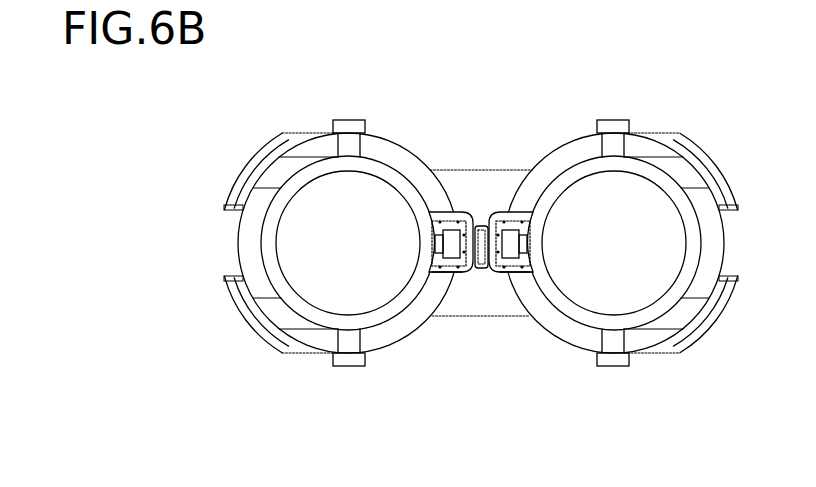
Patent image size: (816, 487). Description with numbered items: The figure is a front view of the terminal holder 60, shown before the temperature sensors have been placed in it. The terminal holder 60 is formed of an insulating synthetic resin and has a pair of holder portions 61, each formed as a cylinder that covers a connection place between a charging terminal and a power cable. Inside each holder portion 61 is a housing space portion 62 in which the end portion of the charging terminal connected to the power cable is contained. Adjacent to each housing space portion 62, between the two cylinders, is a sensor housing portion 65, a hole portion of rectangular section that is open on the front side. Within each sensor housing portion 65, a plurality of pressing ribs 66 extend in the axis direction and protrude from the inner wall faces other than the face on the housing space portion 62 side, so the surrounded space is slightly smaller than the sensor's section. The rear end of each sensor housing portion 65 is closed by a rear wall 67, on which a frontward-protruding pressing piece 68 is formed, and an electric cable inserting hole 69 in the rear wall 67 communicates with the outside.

The terminal holder 60 is at (297, 110).
The holder portion 61 is at (370, 124).
The housing space portion 62 is at (334, 285).
The sensor housing portion 65 is at (441, 211).
The pressing rib 66 is at (481, 239).
The rear wall 67 is at (448, 255).
The pressing piece 68 is at (436, 242).
The electric cable inserting hole 69 is at (446, 273).